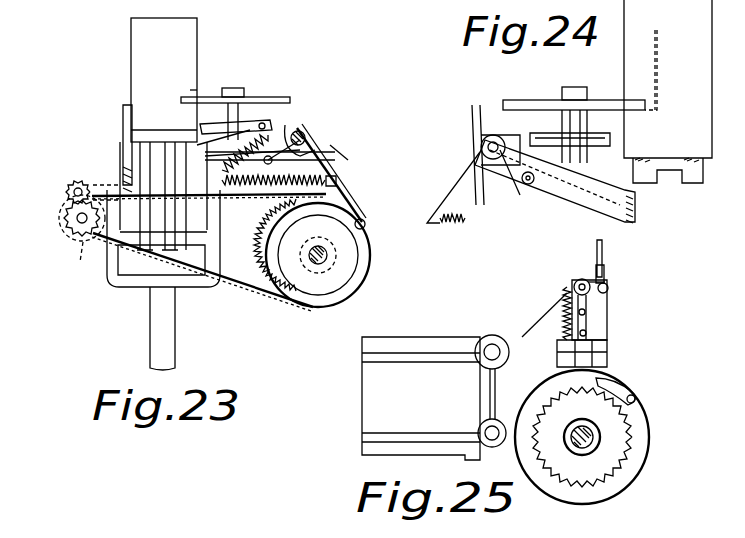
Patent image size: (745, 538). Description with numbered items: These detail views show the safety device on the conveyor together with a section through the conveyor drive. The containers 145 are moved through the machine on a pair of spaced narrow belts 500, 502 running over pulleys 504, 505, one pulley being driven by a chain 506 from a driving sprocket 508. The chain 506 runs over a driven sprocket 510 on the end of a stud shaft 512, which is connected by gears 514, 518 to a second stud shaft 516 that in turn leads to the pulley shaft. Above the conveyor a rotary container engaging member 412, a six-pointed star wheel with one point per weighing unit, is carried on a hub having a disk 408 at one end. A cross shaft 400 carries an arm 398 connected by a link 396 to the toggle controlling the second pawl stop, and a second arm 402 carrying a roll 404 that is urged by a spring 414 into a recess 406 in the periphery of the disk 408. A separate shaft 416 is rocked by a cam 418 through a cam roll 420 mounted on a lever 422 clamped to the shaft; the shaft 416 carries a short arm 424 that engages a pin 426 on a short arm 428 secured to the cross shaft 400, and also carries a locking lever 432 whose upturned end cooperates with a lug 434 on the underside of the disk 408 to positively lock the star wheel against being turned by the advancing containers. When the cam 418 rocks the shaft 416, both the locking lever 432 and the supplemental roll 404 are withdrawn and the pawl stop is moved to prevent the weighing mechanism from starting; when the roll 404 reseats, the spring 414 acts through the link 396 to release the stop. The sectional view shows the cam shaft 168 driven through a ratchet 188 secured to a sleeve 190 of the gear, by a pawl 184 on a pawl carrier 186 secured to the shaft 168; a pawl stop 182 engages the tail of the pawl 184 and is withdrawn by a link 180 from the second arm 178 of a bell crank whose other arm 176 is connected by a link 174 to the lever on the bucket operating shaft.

In FIG. 23, the containers 145 is at (199, 20).
In FIG. 23, the rotary container engaging member 412 is at (197, 91).
In FIG. 23, the lug 434 is at (196, 136).
In FIG. 23, the narrow belt 500 is at (178, 136).
In FIG. 23, the pulley 505 is at (124, 108).
In FIG. 23, the narrow belt 502 is at (143, 134).
In FIG. 23, the pulley 504 is at (142, 165).
In FIG. 23, the gear 518 is at (72, 180).
In FIG. 23, the second stud shaft 516 is at (68, 189).
In FIG. 23, the gear 514 is at (68, 216).
In FIG. 23, the stud shaft 512 is at (94, 226).
In FIG. 23, the driven sprocket 510 is at (83, 254).
In FIG. 23, the chain 506 is at (247, 290).
In FIG. 23, the driving sprocket 508 is at (250, 252).
In FIG. 23, the cam 418 is at (343, 266).
In FIG. 23, the cam roll 420 is at (364, 218).
In FIG. 23, the disk 408 is at (256, 120).
In FIG. 23, the locking lever 432 is at (267, 128).
In FIG. 24, the locking lever 432 is at (545, 177).
In FIG. 23, the roll 404 is at (281, 125).
In FIG. 24, the roll 404 is at (520, 143).
In FIG. 23, the short arm 424 is at (296, 125).
In FIG. 24, the short arm 424 is at (475, 125).
In FIG. 23, the shaft 416 is at (302, 136).
In FIG. 24, the shaft 416 is at (493, 200).
In FIG. 23, the pin 426 is at (322, 145).
In FIG. 23, the short arm 428 is at (338, 160).
In FIG. 23, the cross shaft 400 is at (338, 172).
In FIG. 23, the spring 414 is at (346, 187).
In FIG. 23, the lever 422 is at (362, 200).
In FIG. 24, the recess 406 is at (545, 100).
In FIG. 24, the link 396 is at (472, 117).
In FIG. 24, the second arm 402 is at (522, 183).
In FIG. 24, the arm 398 is at (512, 185).
In FIG. 25, the pawl stop 182 is at (565, 372).
In FIG. 25, the ratchet 188 is at (625, 452).
In FIG. 25, the one revolution shaft 168 is at (600, 437).
In FIG. 25, the sleeve 190 is at (600, 432).
In FIG. 25, the pawl carrier 186 is at (636, 396).
In FIG. 25, the pawl 184 is at (605, 374).
In FIG. 25, the second arm 178 is at (607, 305).
In FIG. 25, the link 180 is at (604, 328).
In FIG. 25, the arm 176 is at (592, 281).
In FIG. 25, the link 174 is at (604, 245).